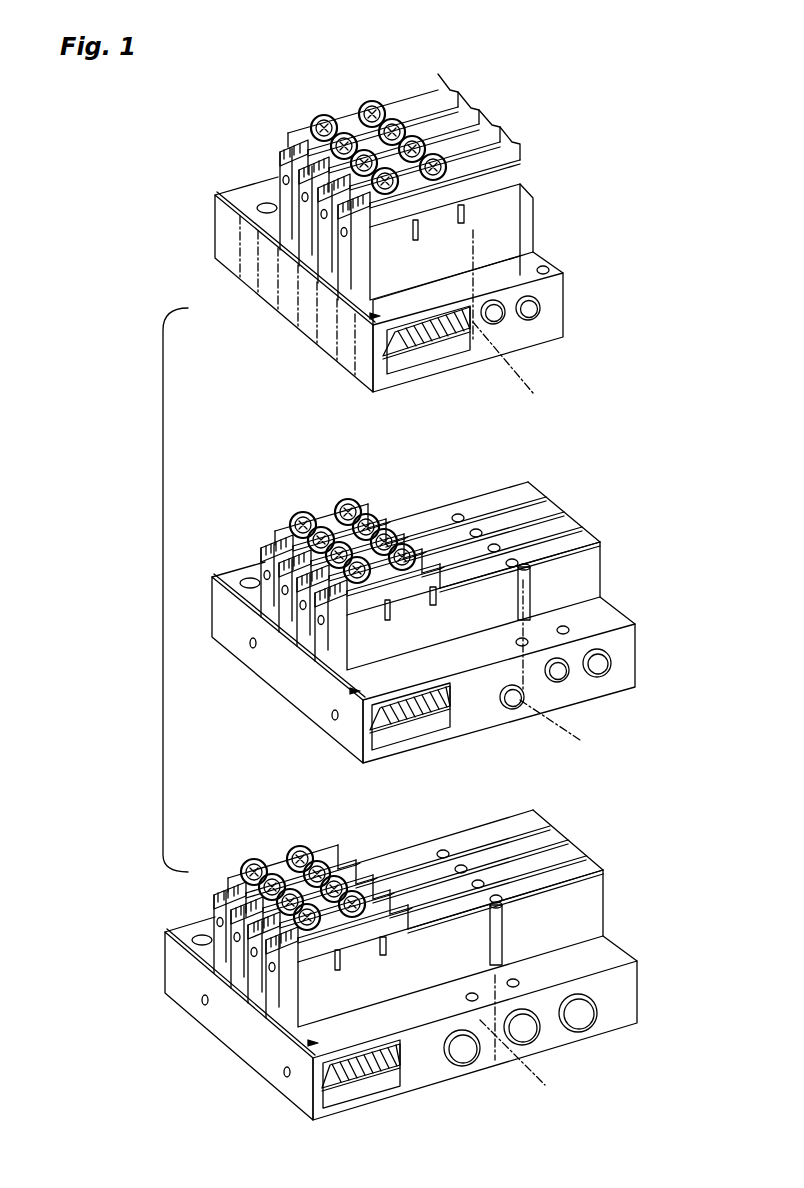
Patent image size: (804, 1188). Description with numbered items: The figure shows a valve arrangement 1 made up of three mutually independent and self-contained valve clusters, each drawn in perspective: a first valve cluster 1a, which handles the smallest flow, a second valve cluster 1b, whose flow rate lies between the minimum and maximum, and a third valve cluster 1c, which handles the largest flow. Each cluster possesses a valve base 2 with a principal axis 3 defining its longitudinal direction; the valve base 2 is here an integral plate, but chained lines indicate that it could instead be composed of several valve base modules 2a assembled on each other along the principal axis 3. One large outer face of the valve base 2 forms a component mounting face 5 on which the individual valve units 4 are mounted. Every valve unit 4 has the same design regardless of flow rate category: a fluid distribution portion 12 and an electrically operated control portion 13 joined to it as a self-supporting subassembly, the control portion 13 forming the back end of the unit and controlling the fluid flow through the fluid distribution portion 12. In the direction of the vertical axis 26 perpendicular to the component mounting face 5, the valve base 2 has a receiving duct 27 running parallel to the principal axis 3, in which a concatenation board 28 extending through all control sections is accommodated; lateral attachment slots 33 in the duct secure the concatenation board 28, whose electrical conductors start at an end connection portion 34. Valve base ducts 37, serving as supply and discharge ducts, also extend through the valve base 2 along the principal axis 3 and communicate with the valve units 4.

The valve arrangement 1 is at (150, 392).
The first valve cluster 1a is at (565, 165).
The second valve cluster 1b is at (615, 549).
The third valve cluster 1c is at (632, 862).
The valve base 2 is at (558, 278).
The valve base modules 2a is at (240, 270).
The principal axis 3 is at (534, 392).
The valve units 4 is at (477, 93).
The component mounting face 5 is at (370, 316).
The fluid distribution portion 12 is at (420, 128).
The control portion 13 is at (340, 148).
The vertical axis 26 is at (473, 232).
The receiving duct 27 is at (447, 352).
The concatenation board 28 is at (462, 345).
The lateral attachment slots 33 is at (475, 326).
The connection portion 34 is at (433, 357).
The valve base ducts 37 is at (500, 312).